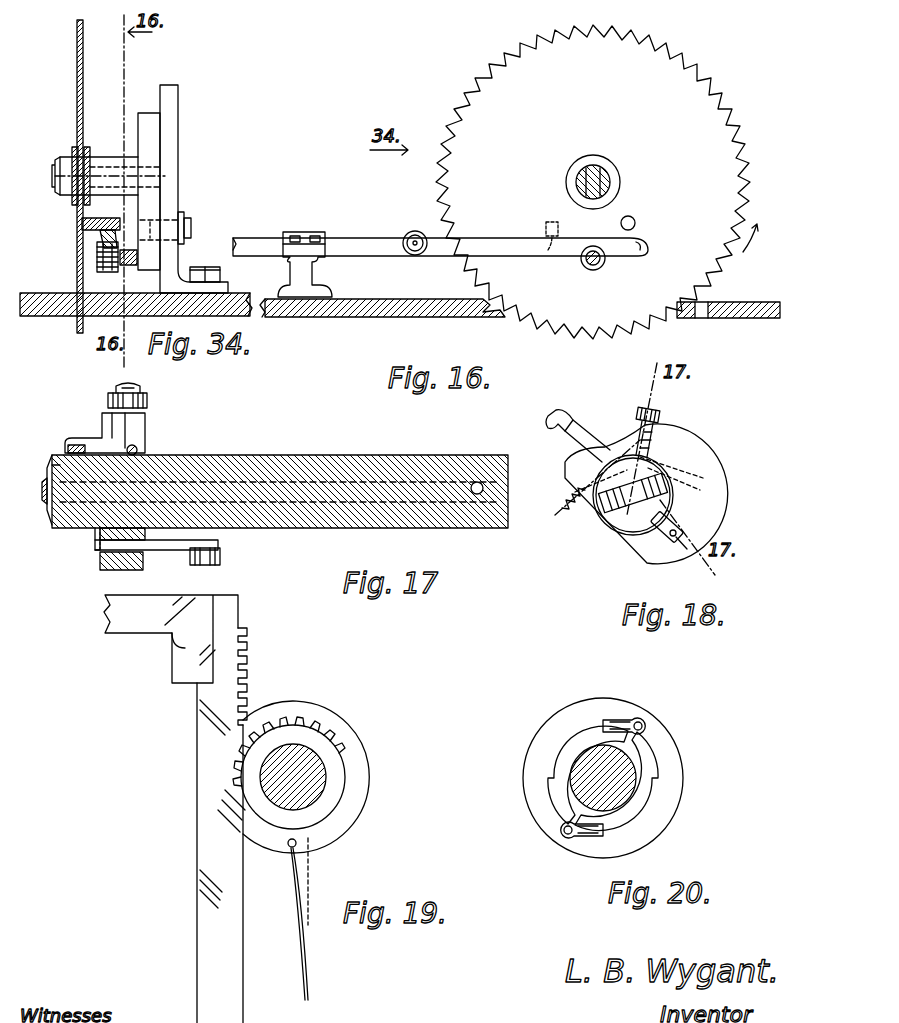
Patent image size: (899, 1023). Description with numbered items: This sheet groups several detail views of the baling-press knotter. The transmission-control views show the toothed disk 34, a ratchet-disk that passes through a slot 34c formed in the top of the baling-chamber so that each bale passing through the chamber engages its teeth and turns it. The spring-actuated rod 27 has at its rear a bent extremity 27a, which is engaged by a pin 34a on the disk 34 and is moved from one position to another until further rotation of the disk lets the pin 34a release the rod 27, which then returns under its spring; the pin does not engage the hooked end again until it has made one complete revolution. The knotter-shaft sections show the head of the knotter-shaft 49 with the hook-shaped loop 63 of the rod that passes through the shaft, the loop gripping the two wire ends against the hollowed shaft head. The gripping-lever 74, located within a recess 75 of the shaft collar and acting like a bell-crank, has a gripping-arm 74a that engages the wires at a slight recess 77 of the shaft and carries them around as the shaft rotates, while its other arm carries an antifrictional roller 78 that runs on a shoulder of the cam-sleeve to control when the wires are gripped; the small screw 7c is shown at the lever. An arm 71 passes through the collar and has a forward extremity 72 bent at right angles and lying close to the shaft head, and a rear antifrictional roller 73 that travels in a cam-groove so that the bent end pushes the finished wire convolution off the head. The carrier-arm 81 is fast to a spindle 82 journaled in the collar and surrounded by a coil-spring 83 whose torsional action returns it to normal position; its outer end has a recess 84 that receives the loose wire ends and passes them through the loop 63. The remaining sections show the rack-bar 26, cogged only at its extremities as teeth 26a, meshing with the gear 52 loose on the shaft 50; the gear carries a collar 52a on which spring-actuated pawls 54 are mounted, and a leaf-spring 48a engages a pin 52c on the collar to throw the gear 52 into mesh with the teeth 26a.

In FIG. 34, the toothed disk 34 is at (77, 55).
In FIG. 16, the toothed disk 34 is at (593, 182).
In FIG. 34, the pin 34a is at (95, 234).
In FIG. 16, the pin 34a is at (632, 216).
In FIG. 16, the slot 34c is at (700, 318).
In FIG. 34, the spring-actuated rod 27 is at (97, 256).
In FIG. 16, the spring-actuated rod 27 is at (356, 238).
In FIG. 16, the bent extremity 27a is at (668, 216).
In FIG. 17, the knotter-shaft 49 is at (300, 455).
In FIG. 17, the recess 77 is at (52, 462).
In FIG. 17, the loop 63 is at (45, 492).
In FIG. 18, the loop 63 is at (626, 508).
In FIG. 17, the recess 75 is at (103, 420).
In FIG. 17, the gripping-lever 74 is at (125, 437).
In FIG. 17, the gripping-arm 74a is at (78, 440).
In FIG. 17, the screw 7c is at (138, 449).
In FIG. 17, the antifrictional roller 78 is at (147, 400).
In FIG. 18, the antifrictional roller 78 is at (662, 423).
In FIG. 17, the forward extremity 72 is at (92, 538).
In FIG. 18, the forward extremity 72 is at (676, 521).
In FIG. 17, the arm 71 is at (172, 550).
In FIG. 18, the arm 71 is at (682, 538).
In FIG. 17, the antifrictional roller 73 is at (222, 556).
In FIG. 18, the carrier-arm 81 is at (585, 432).
In FIG. 18, the recess 84 is at (552, 428).
In FIG. 18, the coil-spring 83 is at (565, 499).
In FIG. 18, the spindle 82 is at (570, 508).
In FIG. 19, the rack-bar 26 is at (174, 809).
In FIG. 19, the teeth 26a is at (250, 670).
In FIG. 19, the gear 52 is at (340, 775).
In FIG. 19, the collar 52a is at (360, 755).
In FIG. 20, the collar 52a is at (676, 752).
In FIG. 19, the pin 52c is at (300, 848).
In FIG. 19, the shaft 50 is at (315, 790).
In FIG. 20, the shaft 50 is at (580, 790).
In FIG. 19, the leaf-spring 48a is at (292, 888).
In FIG. 20, the spring-actuated pawl 54 is at (642, 716).